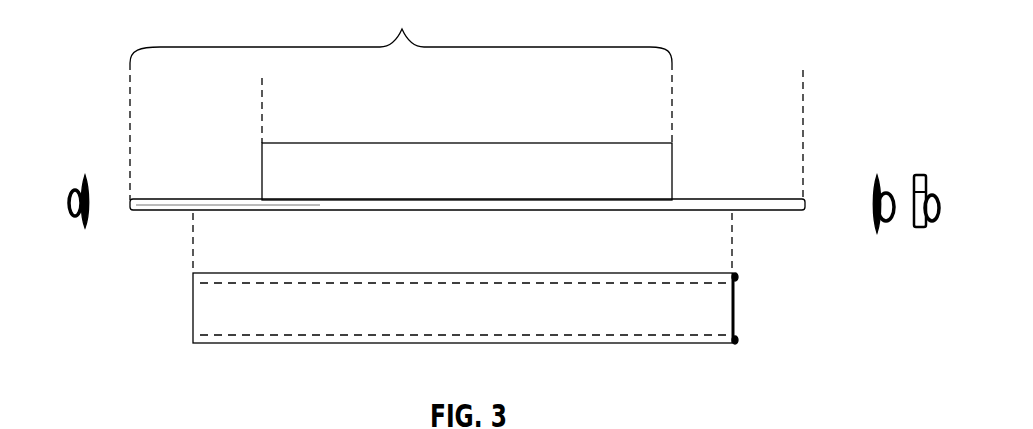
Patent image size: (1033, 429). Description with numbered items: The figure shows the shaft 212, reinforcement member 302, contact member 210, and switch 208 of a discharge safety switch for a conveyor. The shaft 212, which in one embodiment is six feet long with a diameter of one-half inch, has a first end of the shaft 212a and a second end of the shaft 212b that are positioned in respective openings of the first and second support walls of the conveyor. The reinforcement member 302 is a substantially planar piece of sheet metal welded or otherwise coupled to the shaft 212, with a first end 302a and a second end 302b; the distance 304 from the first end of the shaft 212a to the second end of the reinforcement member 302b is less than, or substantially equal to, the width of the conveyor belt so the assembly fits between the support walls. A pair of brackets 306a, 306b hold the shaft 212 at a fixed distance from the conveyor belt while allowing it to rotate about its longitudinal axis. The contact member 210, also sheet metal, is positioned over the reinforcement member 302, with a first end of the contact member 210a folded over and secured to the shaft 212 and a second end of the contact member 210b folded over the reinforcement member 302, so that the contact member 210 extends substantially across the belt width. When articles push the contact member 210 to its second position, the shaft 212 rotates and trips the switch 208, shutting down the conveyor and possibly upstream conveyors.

The switch 208 is at (921, 174).
The contact member 210 is at (723, 298).
The first end of the contact member 210a is at (737, 343).
The second end of the contact member 210b is at (737, 276).
The shaft 212 is at (784, 198).
The first end of the shaft 212a is at (129, 113).
The second end of the shaft 212b is at (801, 118).
The reinforcement member 302 is at (278, 172).
The first end of the reinforcement member 302a is at (263, 108).
The second end of the reinforcement member 302b is at (671, 108).
The distance 304 is at (401, 31).
The first bracket 306a is at (86, 230).
The second bracket 306b is at (877, 235).